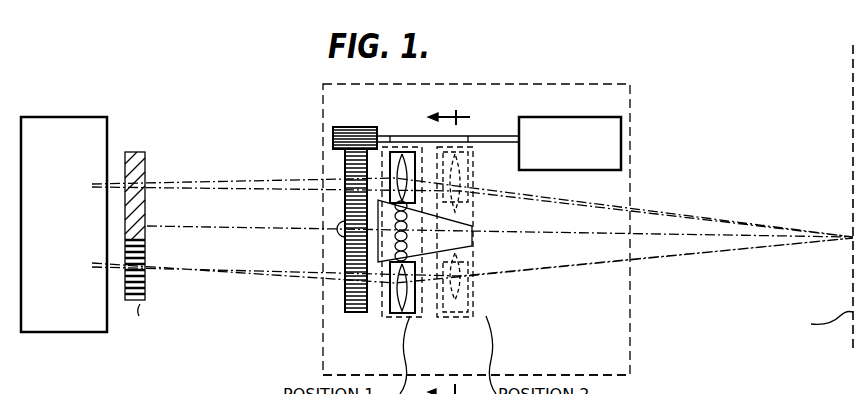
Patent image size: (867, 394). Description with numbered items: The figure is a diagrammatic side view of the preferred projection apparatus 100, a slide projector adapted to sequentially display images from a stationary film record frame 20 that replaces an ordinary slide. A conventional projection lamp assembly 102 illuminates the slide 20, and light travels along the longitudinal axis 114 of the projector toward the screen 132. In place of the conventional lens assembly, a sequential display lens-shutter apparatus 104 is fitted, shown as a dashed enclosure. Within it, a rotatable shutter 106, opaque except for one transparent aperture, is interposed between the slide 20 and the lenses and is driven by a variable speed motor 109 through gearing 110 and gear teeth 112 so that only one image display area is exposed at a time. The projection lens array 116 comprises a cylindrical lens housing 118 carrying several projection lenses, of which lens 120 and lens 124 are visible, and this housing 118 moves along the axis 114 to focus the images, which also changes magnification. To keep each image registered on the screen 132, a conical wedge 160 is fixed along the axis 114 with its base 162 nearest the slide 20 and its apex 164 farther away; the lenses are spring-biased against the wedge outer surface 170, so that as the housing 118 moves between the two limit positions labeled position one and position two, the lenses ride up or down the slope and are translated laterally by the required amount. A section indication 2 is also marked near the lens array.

The projection apparatus 100 is at (464, 78).
The projection lamp assembly 102 is at (107, 117).
The sequential display lens-shutter apparatus 104 is at (318, 348).
The rotatable shutter 106 is at (345, 296).
The motor 109 is at (586, 117).
The gearing 110 is at (357, 127).
The gear teeth 112 is at (345, 206).
The longitudinal axis 114 is at (248, 210).
The projection lens array 116 is at (415, 135).
The cylindrical lens housing 118 is at (394, 136).
The projection lens 120 is at (382, 167).
The projection lens 124 is at (418, 317).
The screen 132 is at (853, 97).
The conical wedge 160 is at (472, 232).
The base 162 is at (345, 245).
The apex 164 is at (474, 243).
The wedge outer surface 170 is at (426, 222).
The direction of section line 2 is at (449, 108).
The stationary film record frame 20 is at (145, 152).